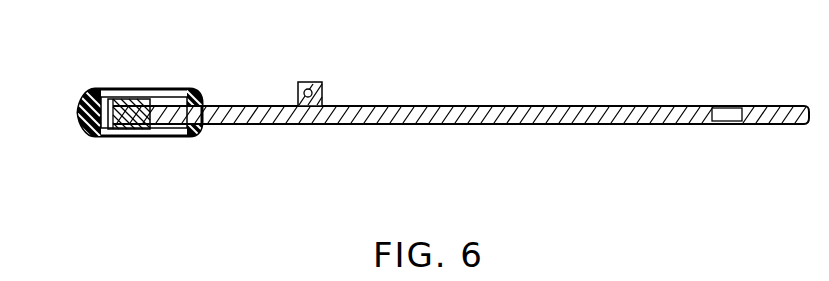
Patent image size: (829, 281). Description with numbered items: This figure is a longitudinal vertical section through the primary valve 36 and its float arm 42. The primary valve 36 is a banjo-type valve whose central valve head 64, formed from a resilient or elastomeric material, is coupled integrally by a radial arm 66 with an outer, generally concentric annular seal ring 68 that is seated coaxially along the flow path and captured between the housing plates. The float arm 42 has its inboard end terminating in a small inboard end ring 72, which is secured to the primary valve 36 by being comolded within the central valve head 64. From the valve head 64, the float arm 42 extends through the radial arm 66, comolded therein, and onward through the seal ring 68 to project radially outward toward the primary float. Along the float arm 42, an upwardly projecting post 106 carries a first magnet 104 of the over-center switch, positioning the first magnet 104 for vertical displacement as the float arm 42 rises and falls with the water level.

The primary valve 36 is at (100, 157).
The float arm 42 is at (456, 113).
The central valve head 64 is at (143, 128).
The radial arm 66 is at (178, 100).
The annular seal ring 68 is at (82, 117).
The inboard end ring 72 is at (130, 105).
The first magnet 104 is at (322, 98).
The post 106 is at (317, 82).